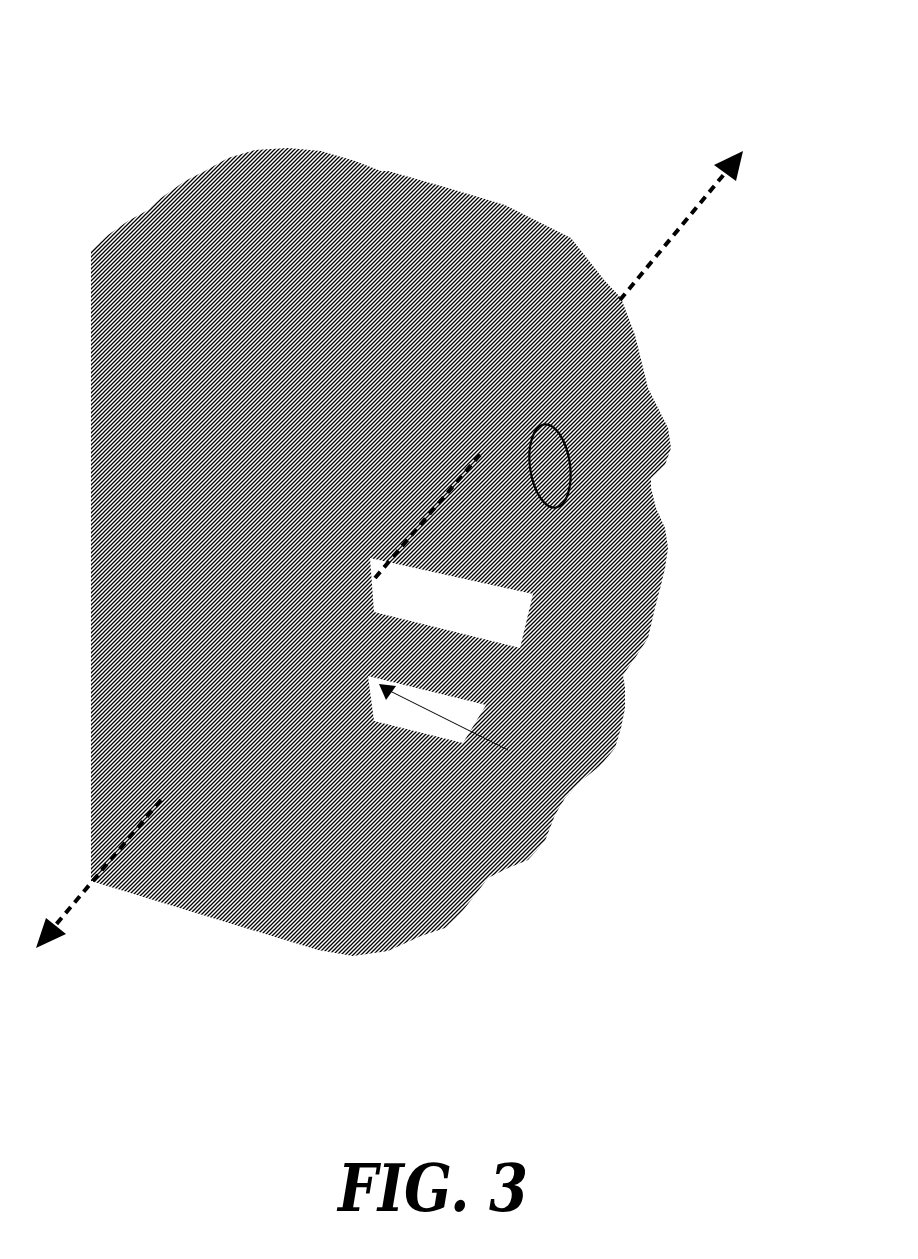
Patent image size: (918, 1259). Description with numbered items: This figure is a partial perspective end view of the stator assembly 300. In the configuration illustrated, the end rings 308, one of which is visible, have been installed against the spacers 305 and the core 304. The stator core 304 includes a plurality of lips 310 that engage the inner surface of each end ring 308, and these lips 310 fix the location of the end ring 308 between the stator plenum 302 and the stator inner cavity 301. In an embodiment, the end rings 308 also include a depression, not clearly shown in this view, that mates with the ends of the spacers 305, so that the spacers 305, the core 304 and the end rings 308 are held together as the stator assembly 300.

The stator assembly 300 is at (472, 112).
The stator inner cavity 301 is at (550, 795).
The stator plenum 302 is at (372, 944).
The stator core 304 is at (473, 530).
The spacers 305 is at (472, 590).
The end rings 308 is at (542, 753).
The lips 310 is at (548, 500).